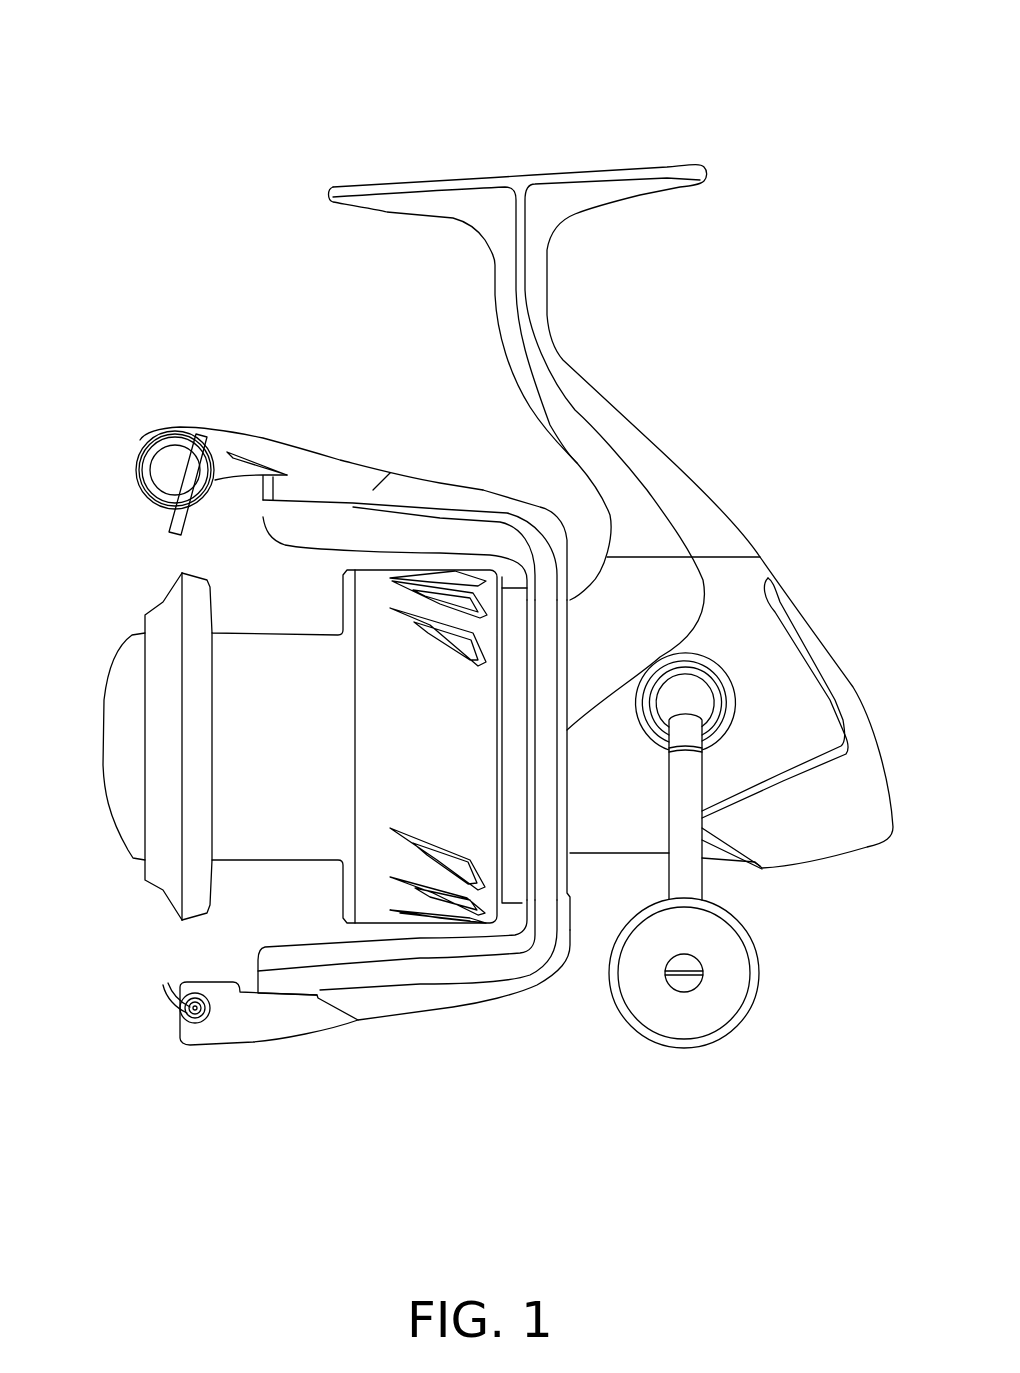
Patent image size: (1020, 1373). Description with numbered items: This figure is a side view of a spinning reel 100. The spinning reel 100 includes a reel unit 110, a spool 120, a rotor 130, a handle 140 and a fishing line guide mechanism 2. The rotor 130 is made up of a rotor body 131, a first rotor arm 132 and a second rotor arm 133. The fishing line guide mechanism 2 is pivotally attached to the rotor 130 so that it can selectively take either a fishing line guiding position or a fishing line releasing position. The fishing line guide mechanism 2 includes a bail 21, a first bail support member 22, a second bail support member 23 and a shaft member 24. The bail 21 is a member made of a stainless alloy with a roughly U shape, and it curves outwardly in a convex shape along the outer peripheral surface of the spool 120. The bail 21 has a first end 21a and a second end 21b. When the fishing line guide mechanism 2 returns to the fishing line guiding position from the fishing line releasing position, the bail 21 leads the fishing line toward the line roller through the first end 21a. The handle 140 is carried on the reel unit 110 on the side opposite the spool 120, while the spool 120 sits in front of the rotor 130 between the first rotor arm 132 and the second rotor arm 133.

The spinning reel 100 is at (777, 104).
The reel unit 110 is at (762, 554).
The spool 120 is at (266, 630).
The rotor 130 is at (440, 480).
The rotor body 131 is at (513, 903).
The first rotor arm 132 is at (485, 500).
The second rotor arm 133 is at (450, 1007).
The handle 140 is at (710, 896).
The fishing line guide mechanism 2 is at (139, 403).
The bail 21 is at (170, 532).
The first end 21a is at (150, 480).
The second end 21b is at (168, 992).
The first bail support member 22 is at (268, 422).
The second bail support member 23 is at (253, 1053).
The shaft member 24 is at (163, 465).